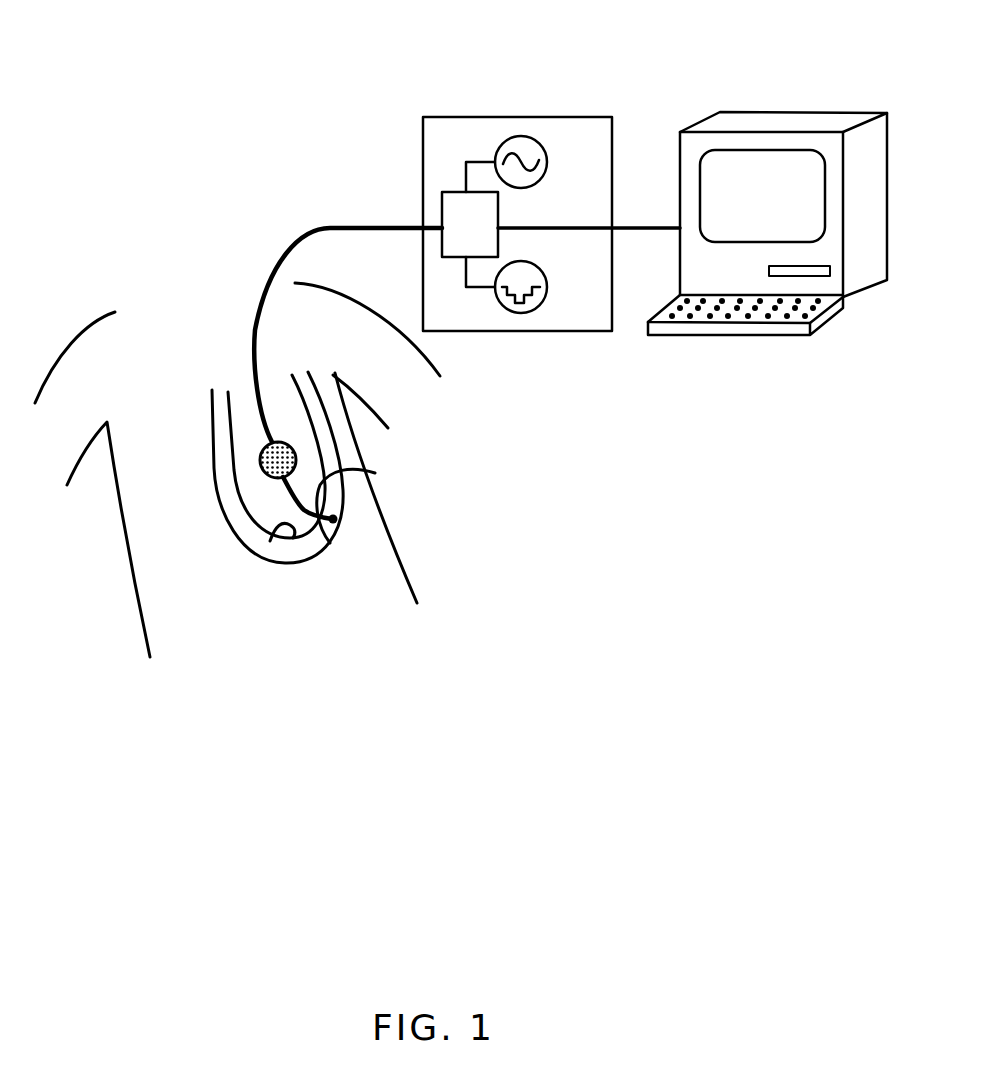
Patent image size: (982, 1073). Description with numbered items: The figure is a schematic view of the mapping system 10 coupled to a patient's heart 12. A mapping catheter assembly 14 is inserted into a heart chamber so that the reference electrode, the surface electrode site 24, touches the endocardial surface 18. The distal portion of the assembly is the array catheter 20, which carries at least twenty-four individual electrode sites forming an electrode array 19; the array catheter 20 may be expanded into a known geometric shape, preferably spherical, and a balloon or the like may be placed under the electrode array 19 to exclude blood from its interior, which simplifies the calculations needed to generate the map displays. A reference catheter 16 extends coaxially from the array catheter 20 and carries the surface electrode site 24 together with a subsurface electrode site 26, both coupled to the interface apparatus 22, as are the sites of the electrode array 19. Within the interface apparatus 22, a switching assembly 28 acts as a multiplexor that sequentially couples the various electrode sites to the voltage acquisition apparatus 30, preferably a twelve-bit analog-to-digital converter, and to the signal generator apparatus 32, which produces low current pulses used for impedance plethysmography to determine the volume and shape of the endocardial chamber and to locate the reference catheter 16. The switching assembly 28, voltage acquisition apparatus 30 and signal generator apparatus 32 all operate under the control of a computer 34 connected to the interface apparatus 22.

The mapping system 10 is at (245, 176).
The patient's heart 12 is at (213, 442).
The mapping catheter assembly 14 is at (250, 294).
The reference catheter 16 is at (293, 500).
The endocardial surface 18 is at (270, 541).
The electrode array 19 is at (288, 481).
The array catheter 20 is at (336, 374).
The interface apparatus 22 is at (467, 117).
The surface electrode site 24 is at (375, 473).
The subsurface electrode site 26 is at (336, 527).
The switching assembly 28 is at (457, 241).
The voltage acquisition apparatus 30 is at (542, 312).
The signal generator apparatus 32 is at (529, 137).
The computer 34 is at (765, 112).